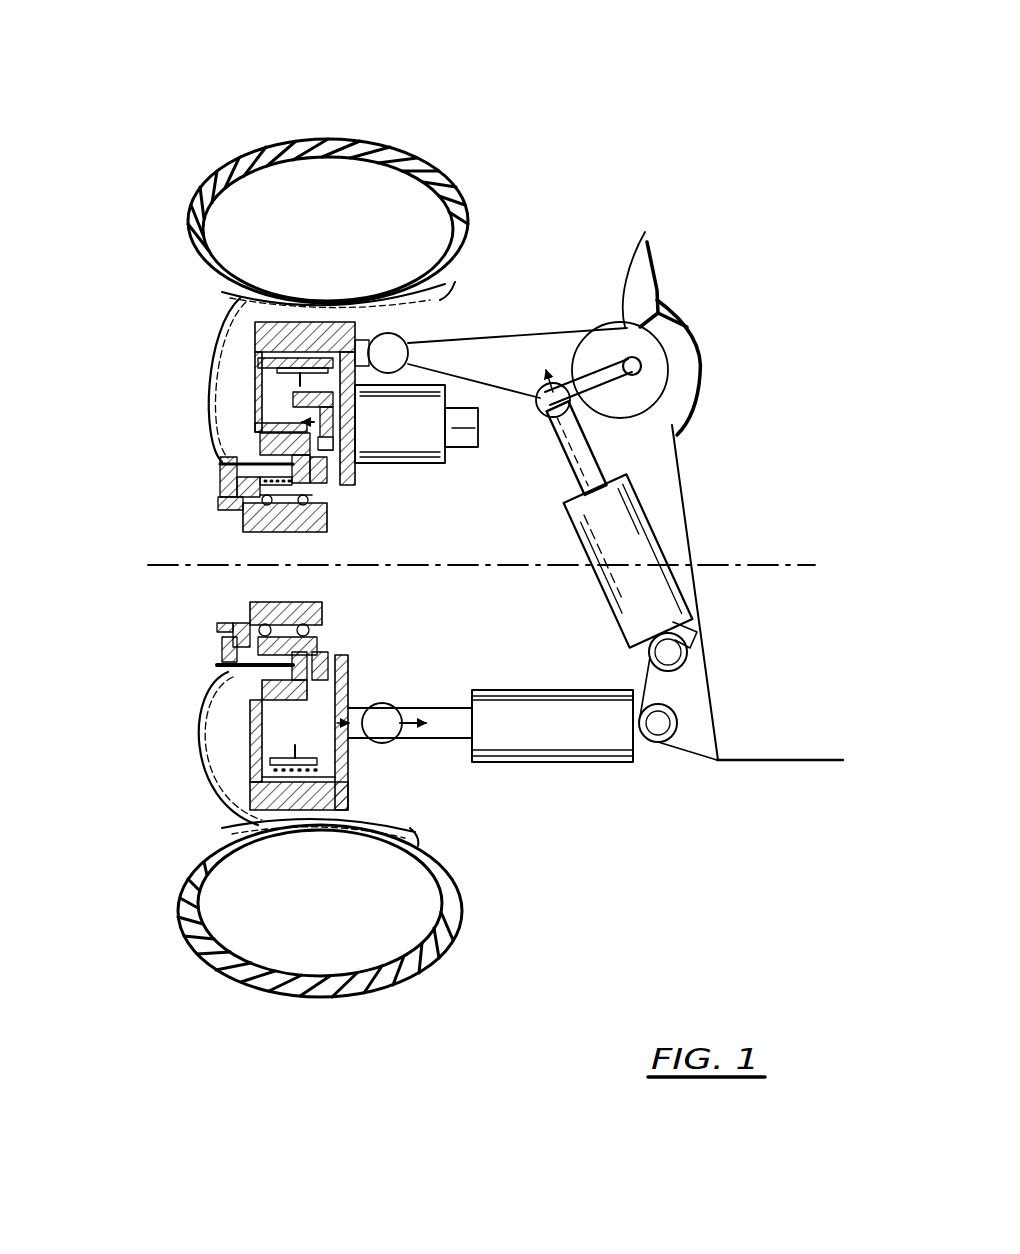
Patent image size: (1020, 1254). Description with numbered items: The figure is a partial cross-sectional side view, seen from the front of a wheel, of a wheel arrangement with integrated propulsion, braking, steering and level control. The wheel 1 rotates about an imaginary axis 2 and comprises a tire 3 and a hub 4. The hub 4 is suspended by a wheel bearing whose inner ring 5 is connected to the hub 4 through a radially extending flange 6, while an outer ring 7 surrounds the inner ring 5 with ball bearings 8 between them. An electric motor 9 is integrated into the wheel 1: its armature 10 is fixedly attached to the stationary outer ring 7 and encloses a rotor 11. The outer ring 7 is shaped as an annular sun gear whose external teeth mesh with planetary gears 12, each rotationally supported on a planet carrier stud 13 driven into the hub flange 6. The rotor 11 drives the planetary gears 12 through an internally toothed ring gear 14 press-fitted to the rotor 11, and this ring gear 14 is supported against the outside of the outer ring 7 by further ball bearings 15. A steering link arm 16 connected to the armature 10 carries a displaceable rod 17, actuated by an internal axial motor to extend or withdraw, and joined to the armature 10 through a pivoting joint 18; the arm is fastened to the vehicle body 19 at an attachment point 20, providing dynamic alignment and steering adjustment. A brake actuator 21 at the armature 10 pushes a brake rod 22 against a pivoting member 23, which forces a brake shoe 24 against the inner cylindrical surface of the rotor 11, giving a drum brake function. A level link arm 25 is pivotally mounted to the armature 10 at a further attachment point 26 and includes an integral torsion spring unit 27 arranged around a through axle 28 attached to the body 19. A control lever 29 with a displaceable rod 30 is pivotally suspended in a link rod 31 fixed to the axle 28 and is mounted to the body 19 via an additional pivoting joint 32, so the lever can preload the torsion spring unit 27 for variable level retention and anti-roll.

The wheel 1 is at (400, 120).
The imaginary axis 2 is at (184, 568).
The tire 3 is at (250, 160).
The hub 4 is at (228, 322).
The inner ring 5 is at (240, 520).
The flange 6 is at (220, 478).
The outer ring 7 is at (330, 486).
The ball bearings 8 is at (312, 500).
The electric motor 9 is at (360, 803).
The armature 10 is at (342, 781).
The rotor 11 is at (240, 745).
The planetary gears 12 is at (262, 435).
The planet carrier stud 13 is at (222, 464).
The ring gear 14 is at (207, 688).
The further ball bearings 15 is at (325, 652).
The steering link arm 16 is at (580, 765).
The displaceable rod 17 is at (453, 710).
The pivoting joint 18 is at (390, 712).
The vehicle body 19 is at (770, 765).
The attachment point 20 is at (677, 722).
The brake actuator 21 is at (553, 350).
The brake rod 22 is at (440, 402).
The pivoting member 23 is at (262, 400).
The brake shoe 24 is at (262, 385).
The level link arm 25 is at (645, 232).
The further attachment point 26 is at (408, 345).
The torsion spring unit 27 is at (656, 287).
The through axle 28 is at (687, 327).
The control lever 29 is at (640, 538).
The rod 30 is at (614, 458).
The link rod 31 is at (600, 425).
The additional pivoting joint 32 is at (688, 645).